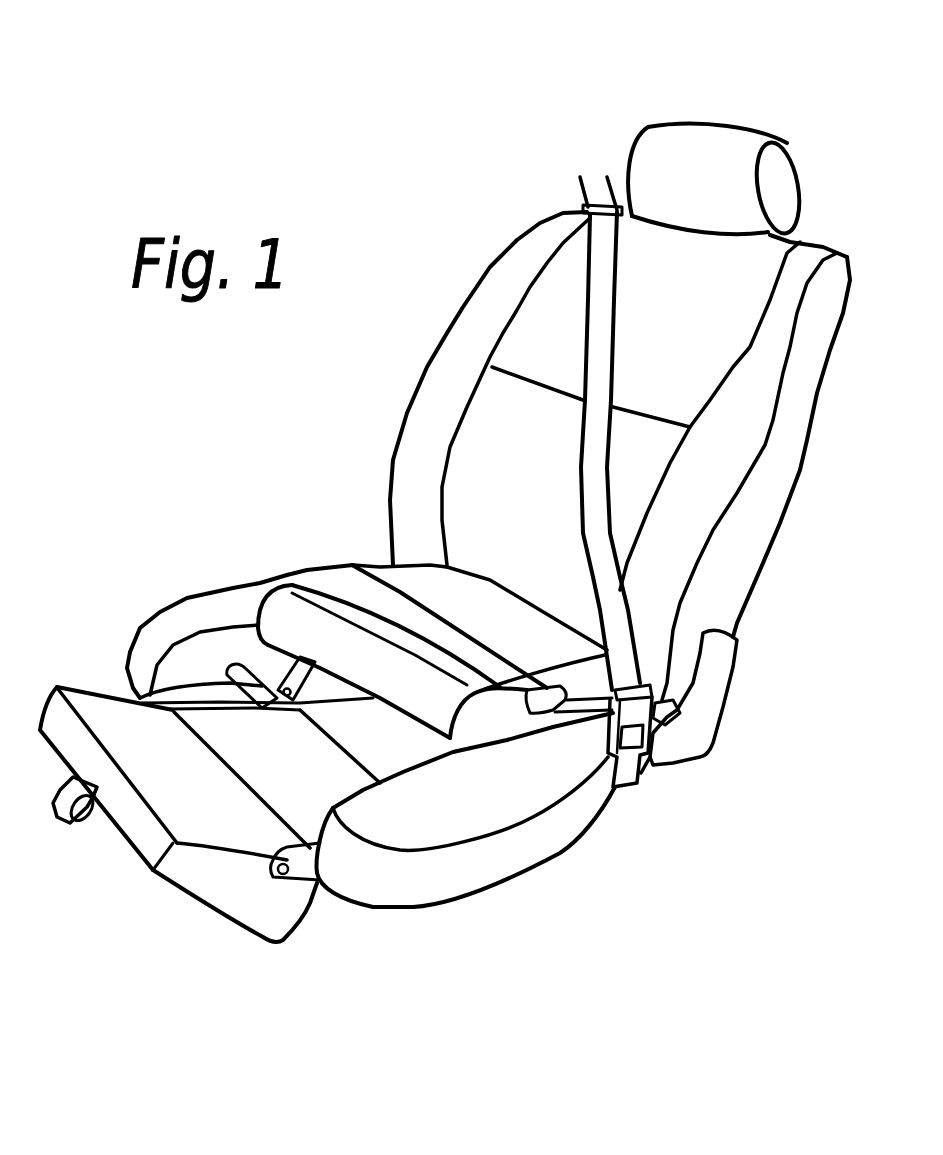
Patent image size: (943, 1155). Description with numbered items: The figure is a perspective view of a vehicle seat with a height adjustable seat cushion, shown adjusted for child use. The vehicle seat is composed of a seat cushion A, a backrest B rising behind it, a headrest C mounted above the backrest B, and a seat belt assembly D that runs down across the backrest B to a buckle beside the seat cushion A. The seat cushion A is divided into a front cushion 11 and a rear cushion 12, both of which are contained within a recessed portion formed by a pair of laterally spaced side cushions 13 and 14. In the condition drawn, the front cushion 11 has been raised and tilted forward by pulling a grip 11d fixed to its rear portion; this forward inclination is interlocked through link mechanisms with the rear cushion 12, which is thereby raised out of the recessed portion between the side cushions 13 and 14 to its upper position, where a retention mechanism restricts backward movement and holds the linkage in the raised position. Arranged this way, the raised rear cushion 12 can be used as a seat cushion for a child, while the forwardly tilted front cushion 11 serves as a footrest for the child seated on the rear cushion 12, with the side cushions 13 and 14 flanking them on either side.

The seat cushion A is at (488, 916).
The backrest B is at (430, 350).
The headrest C is at (738, 107).
The seat belt assembly D is at (587, 290).
The front cushion 11 is at (75, 674).
The grip 11d is at (61, 813).
The rear cushion 12 is at (365, 556).
The side cushion 13 is at (605, 831).
The side cushion 14 is at (196, 585).